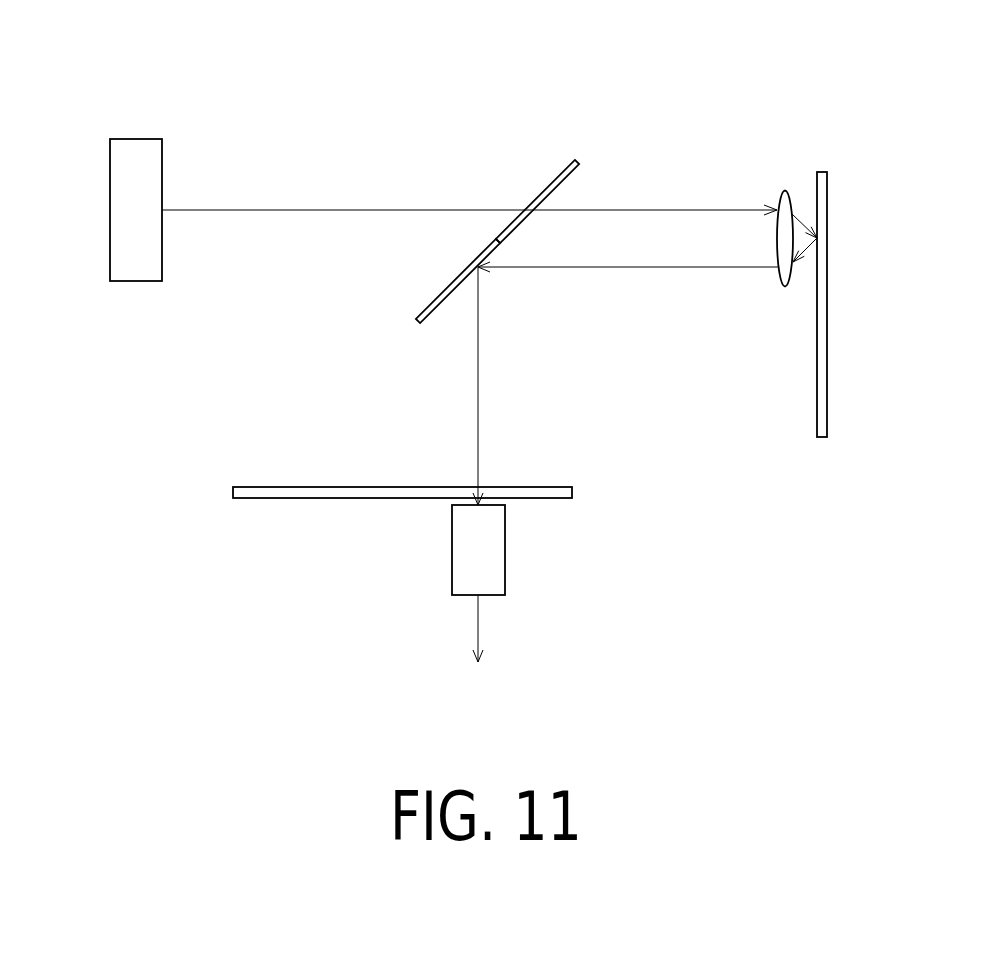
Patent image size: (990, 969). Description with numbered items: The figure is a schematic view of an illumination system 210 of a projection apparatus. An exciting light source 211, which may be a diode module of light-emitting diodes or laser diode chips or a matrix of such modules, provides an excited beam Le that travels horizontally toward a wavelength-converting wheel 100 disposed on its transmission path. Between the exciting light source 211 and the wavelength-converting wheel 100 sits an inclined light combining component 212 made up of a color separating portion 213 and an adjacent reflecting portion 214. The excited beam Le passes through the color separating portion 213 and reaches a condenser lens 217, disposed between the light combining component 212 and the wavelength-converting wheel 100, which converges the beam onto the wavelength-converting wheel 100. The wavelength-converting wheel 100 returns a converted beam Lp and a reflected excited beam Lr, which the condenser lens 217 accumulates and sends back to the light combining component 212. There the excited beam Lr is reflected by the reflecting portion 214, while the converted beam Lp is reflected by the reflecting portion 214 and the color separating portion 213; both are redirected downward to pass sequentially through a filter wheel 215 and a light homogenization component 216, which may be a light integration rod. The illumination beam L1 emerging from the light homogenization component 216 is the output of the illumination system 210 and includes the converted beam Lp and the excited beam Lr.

The illumination system 210 is at (825, 668).
The exciting light source 211 is at (136, 156).
The light combining component 212 is at (572, 63).
The color separating portion 213 is at (552, 187).
The reflecting portion 214 is at (458, 282).
The filter wheel 215 is at (307, 498).
The light homogenization component 216 is at (490, 550).
The condenser lens 217 is at (797, 187).
The wavelength-converting wheel 100 is at (822, 330).
The excited beam Le is at (310, 209).
The converted beam Lp is at (647, 289).
The excited beam Lr is at (632, 268).
The illumination beam L1 is at (478, 622).